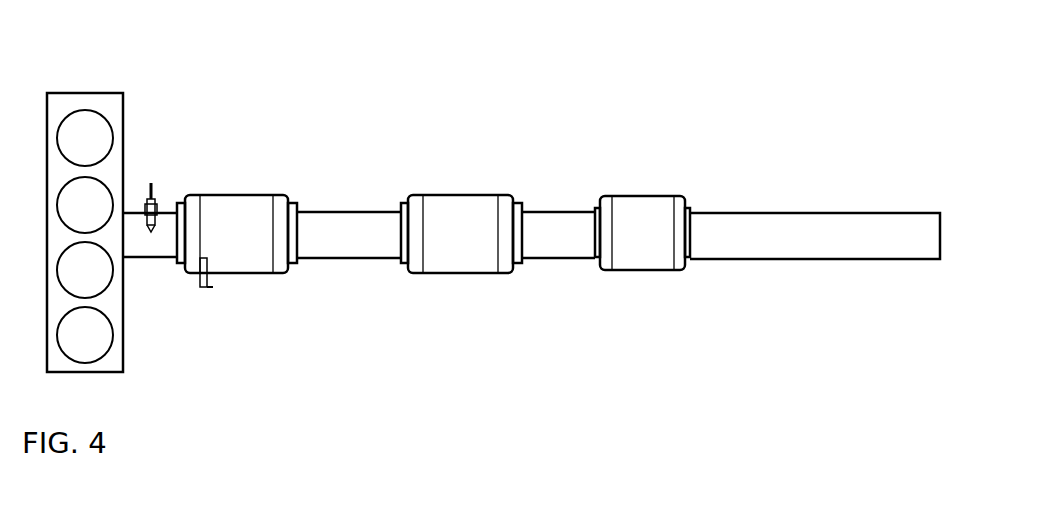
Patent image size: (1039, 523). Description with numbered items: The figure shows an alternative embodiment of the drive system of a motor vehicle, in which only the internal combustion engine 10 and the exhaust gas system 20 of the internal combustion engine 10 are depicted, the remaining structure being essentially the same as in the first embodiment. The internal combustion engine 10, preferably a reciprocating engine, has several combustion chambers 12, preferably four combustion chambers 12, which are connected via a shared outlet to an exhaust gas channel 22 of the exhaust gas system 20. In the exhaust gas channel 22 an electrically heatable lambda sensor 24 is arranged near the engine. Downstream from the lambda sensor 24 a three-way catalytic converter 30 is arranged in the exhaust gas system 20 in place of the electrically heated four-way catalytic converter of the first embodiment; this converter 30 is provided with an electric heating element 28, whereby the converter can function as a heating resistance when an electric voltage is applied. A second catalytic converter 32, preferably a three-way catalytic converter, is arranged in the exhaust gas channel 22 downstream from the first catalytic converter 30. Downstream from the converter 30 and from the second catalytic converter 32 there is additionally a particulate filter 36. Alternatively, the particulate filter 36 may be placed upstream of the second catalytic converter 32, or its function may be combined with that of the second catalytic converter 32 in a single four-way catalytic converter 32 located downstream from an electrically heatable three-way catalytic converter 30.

The internal combustion engine 10 is at (73, 98).
The combustion chamber 12 is at (122, 236).
The exhaust gas system 20 is at (531, 209).
The exhaust gas channel 22 is at (363, 236).
The lambda sensor 24 is at (152, 178).
The electric heating element 28 is at (208, 278).
The three-way catalytic converter 30 is at (235, 218).
The second catalytic converter 32 is at (457, 196).
The particulate filter 36 is at (648, 249).